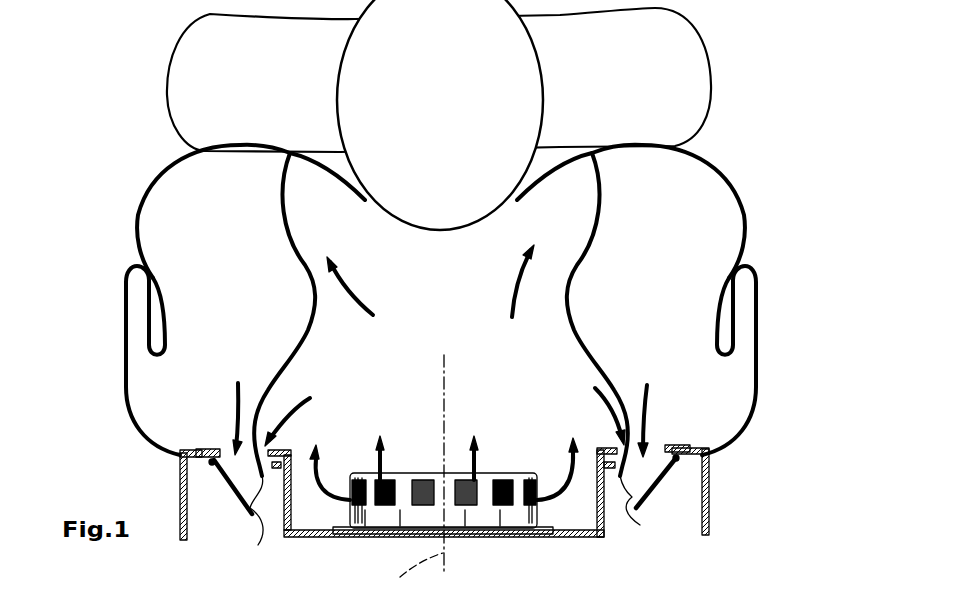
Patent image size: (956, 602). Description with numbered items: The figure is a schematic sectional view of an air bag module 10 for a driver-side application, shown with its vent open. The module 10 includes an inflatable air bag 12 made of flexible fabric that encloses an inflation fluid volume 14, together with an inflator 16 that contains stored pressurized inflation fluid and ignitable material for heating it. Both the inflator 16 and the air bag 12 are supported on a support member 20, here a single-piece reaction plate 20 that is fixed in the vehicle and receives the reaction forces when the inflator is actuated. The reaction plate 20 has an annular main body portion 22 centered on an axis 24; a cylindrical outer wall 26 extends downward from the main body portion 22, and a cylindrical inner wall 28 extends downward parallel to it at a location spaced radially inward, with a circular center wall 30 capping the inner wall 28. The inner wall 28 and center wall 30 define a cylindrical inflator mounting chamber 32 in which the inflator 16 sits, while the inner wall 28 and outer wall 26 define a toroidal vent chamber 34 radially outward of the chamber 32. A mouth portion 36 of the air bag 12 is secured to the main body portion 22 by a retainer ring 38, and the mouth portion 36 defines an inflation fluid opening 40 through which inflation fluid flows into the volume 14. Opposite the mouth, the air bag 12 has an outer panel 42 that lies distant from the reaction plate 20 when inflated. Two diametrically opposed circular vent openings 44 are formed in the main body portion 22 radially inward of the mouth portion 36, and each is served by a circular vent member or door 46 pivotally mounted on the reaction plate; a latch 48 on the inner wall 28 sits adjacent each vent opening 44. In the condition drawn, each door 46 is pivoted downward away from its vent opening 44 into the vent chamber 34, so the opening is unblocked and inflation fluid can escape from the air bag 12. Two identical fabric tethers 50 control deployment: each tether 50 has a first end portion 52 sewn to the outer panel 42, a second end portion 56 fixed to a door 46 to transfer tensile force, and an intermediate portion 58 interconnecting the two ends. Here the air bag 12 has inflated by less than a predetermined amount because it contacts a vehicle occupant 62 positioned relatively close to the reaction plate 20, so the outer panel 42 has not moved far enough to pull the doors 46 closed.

The air bag module 10 is at (93, 407).
The air bag 12 is at (120, 376).
The inflation fluid volume 14 is at (374, 310).
The inflator 16 is at (420, 462).
The support member (reaction plate) 20 is at (733, 491).
The annular main body portion 22 is at (253, 456).
The axis 24 is at (417, 478).
The outer wall 26 is at (180, 497).
The inner wall 28 is at (296, 506).
The center wall 30 is at (575, 537).
The inflator mounting chamber 32 is at (570, 510).
The vent chamber 34 is at (678, 502).
The mouth portion 36 is at (702, 447).
The retainer ring 38 is at (213, 450).
The inflation fluid opening 40 is at (550, 465).
The outer panel 42 is at (488, 230).
The vent opening 44 is at (243, 463).
The vent member (door) 46 is at (258, 525).
The latch 48 is at (278, 470).
The tether 50 is at (306, 316).
The first end portion 52 is at (282, 188).
The second end portion 56 is at (293, 453).
The intermediate portion 58 is at (293, 350).
The vehicle occupant 62 is at (182, 62).